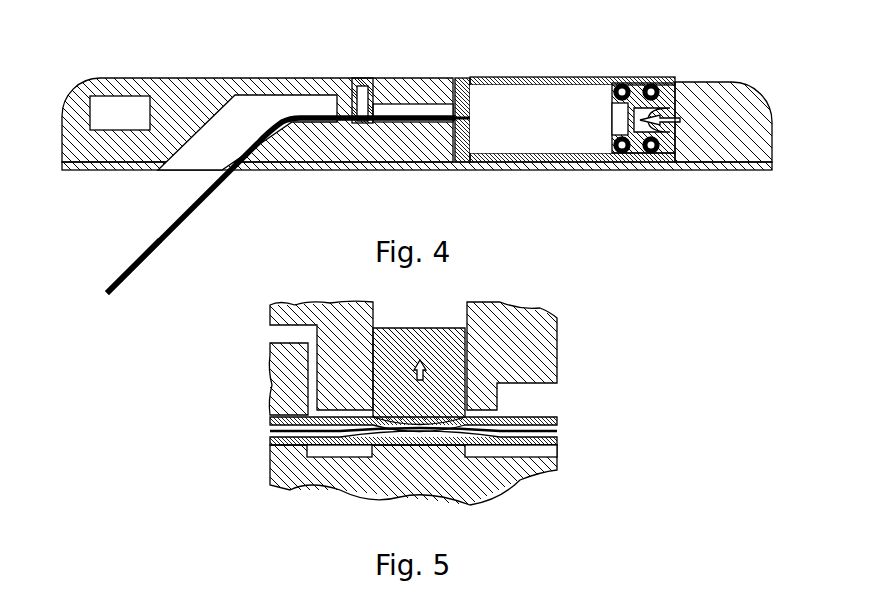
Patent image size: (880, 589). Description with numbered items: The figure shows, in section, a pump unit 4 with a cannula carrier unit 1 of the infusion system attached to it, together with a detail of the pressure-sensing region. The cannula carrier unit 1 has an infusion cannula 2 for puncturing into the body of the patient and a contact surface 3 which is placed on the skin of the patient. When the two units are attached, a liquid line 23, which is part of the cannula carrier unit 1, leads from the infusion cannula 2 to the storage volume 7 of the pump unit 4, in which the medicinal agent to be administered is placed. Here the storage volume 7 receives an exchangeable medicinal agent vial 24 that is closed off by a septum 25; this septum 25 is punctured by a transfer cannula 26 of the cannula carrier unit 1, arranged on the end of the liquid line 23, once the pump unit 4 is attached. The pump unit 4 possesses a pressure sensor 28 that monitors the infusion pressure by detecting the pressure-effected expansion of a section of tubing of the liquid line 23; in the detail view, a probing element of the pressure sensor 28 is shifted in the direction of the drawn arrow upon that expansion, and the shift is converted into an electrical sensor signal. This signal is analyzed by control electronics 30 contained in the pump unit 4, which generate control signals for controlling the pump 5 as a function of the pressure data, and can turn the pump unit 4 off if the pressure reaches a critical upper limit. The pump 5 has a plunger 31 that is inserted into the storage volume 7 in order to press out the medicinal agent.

In FIG. 4, the cannula carrier unit 1 is at (320, 162).
In FIG. 4, the infusion cannula 2 is at (144, 257).
In FIG. 4, the contact surface 3 is at (118, 170).
In FIG. 4, the pump unit 4 is at (736, 78).
In FIG. 4, the pump 5 is at (640, 160).
In FIG. 4, the storage volume 7 is at (526, 100).
In FIG. 4, the liquid line 23 is at (285, 128).
In FIG. 5, the liquid line 23 is at (275, 431).
In FIG. 4, the medicinal agent vial 24 is at (563, 77).
In FIG. 4, the septum 25 is at (448, 160).
In FIG. 4, the transfer cannula 26 is at (482, 113).
In FIG. 4, the pressure sensor 28 is at (357, 78).
In FIG. 5, the pressure sensor 28 is at (415, 328).
In FIG. 4, the control electronics 30 is at (120, 104).
In FIG. 4, the plunger 31 is at (640, 83).